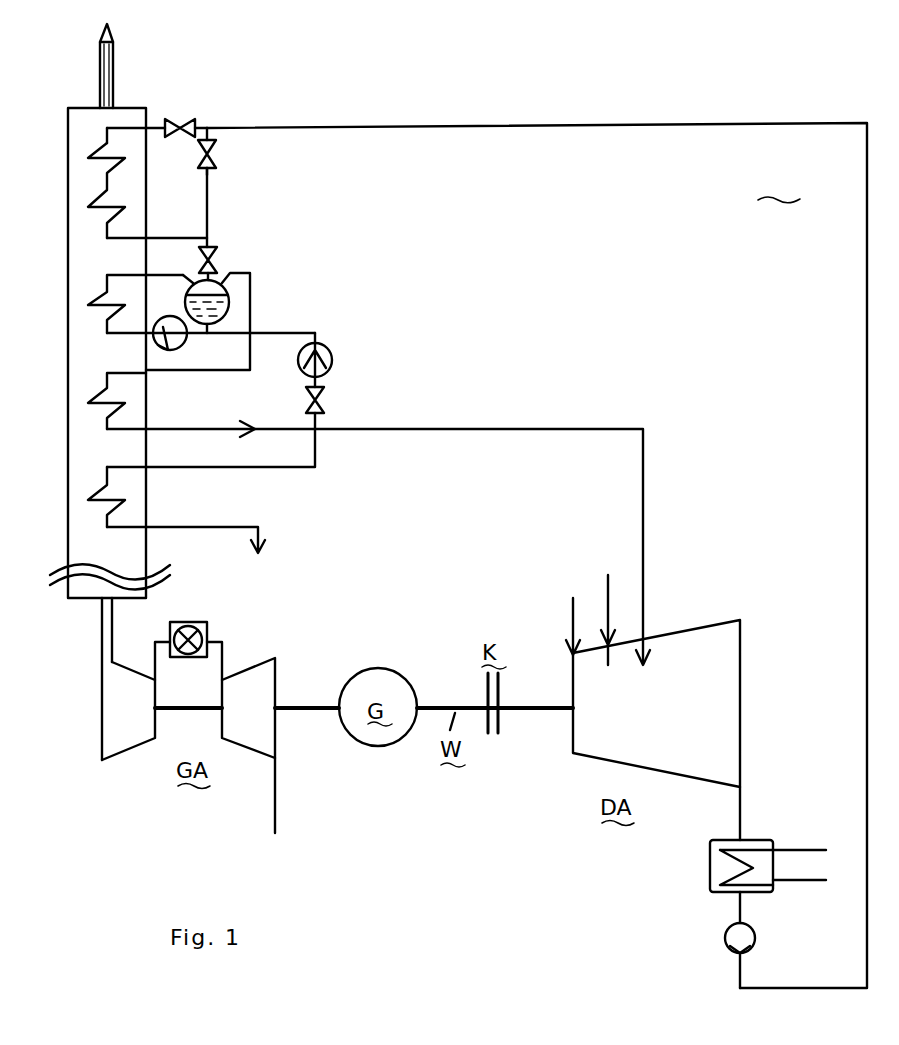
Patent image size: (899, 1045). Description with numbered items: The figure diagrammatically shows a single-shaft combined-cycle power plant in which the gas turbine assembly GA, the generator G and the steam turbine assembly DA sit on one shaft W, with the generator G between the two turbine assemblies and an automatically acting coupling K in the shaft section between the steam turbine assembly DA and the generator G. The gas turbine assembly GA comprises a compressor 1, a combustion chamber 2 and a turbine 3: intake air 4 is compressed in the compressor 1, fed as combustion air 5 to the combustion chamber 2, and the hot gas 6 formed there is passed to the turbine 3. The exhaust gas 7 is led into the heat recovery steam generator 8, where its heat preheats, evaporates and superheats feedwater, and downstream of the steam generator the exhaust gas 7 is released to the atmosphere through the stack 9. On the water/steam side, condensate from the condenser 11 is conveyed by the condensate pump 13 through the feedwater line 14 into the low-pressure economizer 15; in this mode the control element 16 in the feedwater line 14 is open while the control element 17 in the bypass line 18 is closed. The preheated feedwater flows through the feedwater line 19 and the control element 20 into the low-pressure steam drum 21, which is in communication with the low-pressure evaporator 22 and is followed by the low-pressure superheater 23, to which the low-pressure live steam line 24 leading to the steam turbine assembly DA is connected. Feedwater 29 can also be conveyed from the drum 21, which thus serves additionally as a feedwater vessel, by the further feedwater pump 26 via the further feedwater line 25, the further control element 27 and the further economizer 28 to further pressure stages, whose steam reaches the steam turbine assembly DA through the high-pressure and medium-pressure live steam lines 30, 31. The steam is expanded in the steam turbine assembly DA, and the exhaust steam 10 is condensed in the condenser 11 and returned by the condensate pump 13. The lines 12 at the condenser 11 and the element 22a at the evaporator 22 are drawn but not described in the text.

The compressor 1 is at (248, 708).
The combustion chamber 2 is at (197, 625).
The turbine 3 is at (128, 711).
The intake air 4 is at (278, 790).
The combustion air 5 is at (226, 645).
The hot gas 6 is at (160, 641).
The exhaust gas 7 is at (100, 630).
The heat recovery steam generator 8 is at (40, 572).
The stack 9 is at (97, 80).
The exhaust steam 10 is at (740, 800).
The condenser 11 is at (712, 862).
The cooling water lines 12 is at (797, 845).
The condensate pump 13 is at (757, 938).
The feedwater line 14 is at (866, 343).
The low-pressure economizer 15 is at (100, 190).
The control element 16 is at (180, 120).
The control element 17 is at (213, 150).
The bypass line 18 is at (210, 200).
The feedwater line 19 is at (160, 240).
The control element 20 is at (212, 262).
The low-pressure steam drum 21 is at (230, 302).
The low-pressure evaporator 22 is at (107, 302).
The circulating pump 22a is at (153, 350).
The low-pressure superheater 23 is at (88, 395).
The low-pressure live steam line 24 is at (215, 432).
The further feedwater line 25 is at (315, 333).
The further feedwater pump 26 is at (332, 355).
The further control element 27 is at (326, 406).
The further economizer 28 is at (88, 492).
The feedwater 29 is at (262, 525).
The high-pressure live steam line 30 is at (573, 598).
The medium-pressure live steam line 31 is at (606, 602).